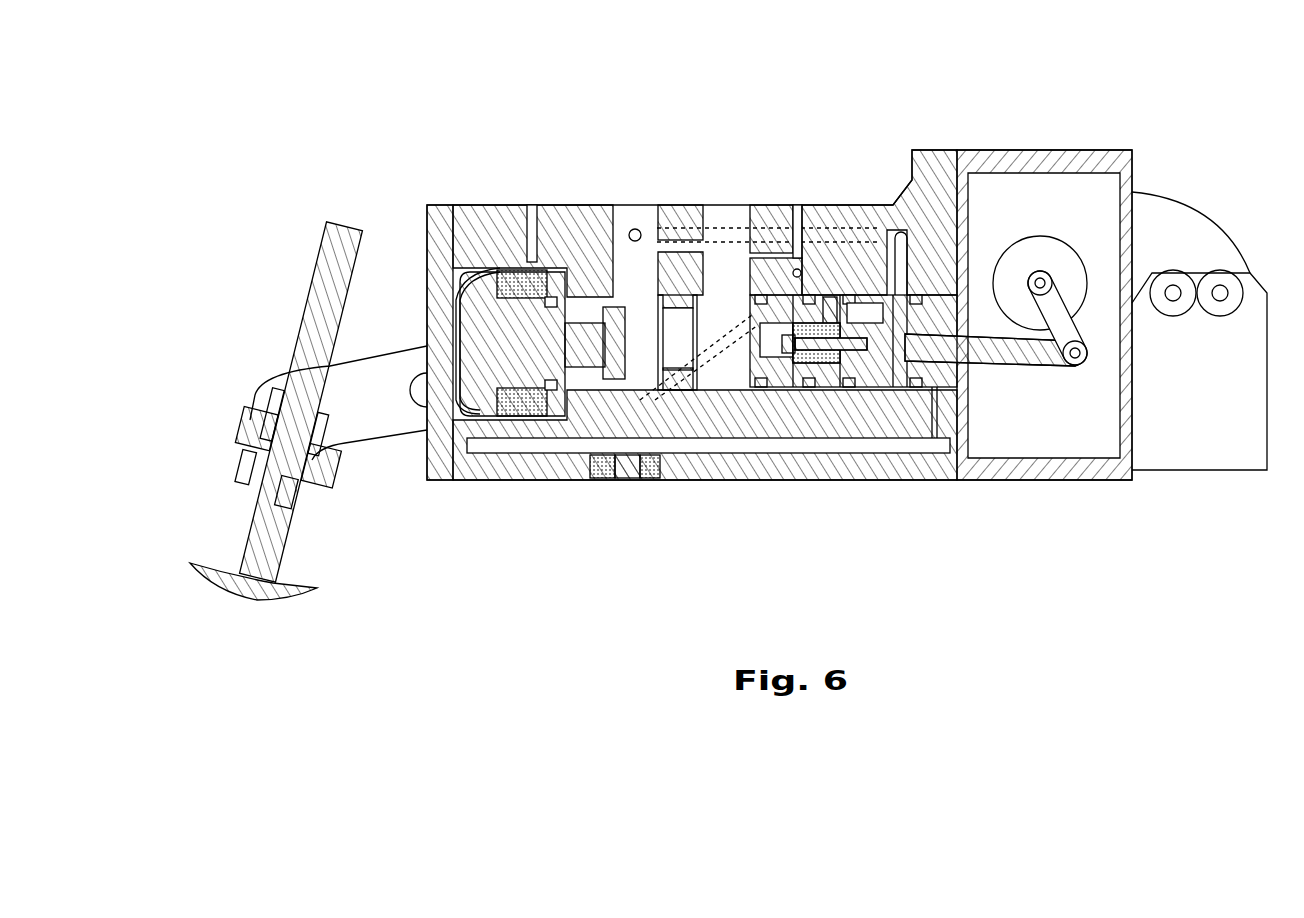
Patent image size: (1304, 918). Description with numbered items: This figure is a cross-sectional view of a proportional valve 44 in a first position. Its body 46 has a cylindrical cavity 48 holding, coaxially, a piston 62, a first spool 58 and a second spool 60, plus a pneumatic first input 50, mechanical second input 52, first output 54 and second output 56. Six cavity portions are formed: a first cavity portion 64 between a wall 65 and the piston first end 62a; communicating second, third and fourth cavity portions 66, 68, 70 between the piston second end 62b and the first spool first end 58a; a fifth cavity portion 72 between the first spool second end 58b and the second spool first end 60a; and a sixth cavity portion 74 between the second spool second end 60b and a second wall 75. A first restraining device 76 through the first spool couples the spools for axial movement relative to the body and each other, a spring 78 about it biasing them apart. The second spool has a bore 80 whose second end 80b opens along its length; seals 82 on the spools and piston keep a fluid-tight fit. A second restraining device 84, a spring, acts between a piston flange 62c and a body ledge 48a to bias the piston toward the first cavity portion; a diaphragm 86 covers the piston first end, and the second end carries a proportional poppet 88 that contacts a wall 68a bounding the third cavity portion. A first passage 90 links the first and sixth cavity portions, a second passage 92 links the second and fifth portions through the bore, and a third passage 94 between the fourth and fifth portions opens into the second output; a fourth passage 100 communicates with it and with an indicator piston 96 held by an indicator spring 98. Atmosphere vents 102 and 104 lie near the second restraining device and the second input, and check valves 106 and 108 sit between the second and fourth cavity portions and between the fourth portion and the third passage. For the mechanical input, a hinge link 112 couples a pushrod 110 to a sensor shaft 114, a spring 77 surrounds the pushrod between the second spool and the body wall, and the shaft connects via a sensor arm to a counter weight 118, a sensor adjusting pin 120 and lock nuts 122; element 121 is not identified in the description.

The proportional valve 44 is at (1080, 92).
The body 46 is at (452, 207).
The cylindrical cavity 48 is at (557, 420).
The ledge 48a is at (546, 300).
The first input 50 is at (722, 196).
The second input 52 is at (992, 370).
The first output 54 is at (632, 205).
The second output 56 is at (795, 200).
The first spool 58 is at (790, 390).
The first spool first end 58a is at (762, 390).
The first spool second end 58b is at (858, 300).
The second spool 60 is at (892, 378).
The second spool first end 60a is at (830, 390).
The second spool second end 60b is at (951, 300).
The piston 62 is at (522, 354).
The piston first end 62a is at (478, 328).
The piston second end 62b is at (606, 445).
The flange 62c is at (513, 440).
The first cavity portion 64 is at (462, 272).
The wall 65 is at (456, 300).
The second cavity portion 66 is at (640, 284).
The third cavity portion 68 is at (688, 364).
The wall 68a is at (616, 455).
The fourth cavity portion 70 is at (724, 326).
The fifth cavity portion 72 is at (830, 297).
The sixth cavity portion 74 is at (935, 395).
The second wall 75 is at (935, 310).
The first restraining device 76 is at (792, 345).
The spring 77 is at (949, 380).
The spring 78 is at (812, 300).
The bore 80 is at (905, 390).
The bore second end 80b is at (899, 232).
The seals 82 is at (552, 297).
The second restraining device 84 is at (498, 270).
The diaphragm 86 is at (460, 420).
The proportional poppet 88 is at (640, 330).
The first passage 90 is at (880, 387).
The second passage 92 is at (830, 300).
The third passage 94 is at (795, 260).
The indicator piston 96 is at (656, 455).
The indicator spring 98 is at (640, 440).
The fourth passage 100 is at (657, 420).
The atmosphere vent 102 is at (530, 205).
The atmosphere vent 104 is at (1128, 447).
The check valve 106 is at (668, 250).
The check valve 108 is at (795, 272).
The pushrod 110 is at (1020, 352).
The hinge link 112 is at (1058, 310).
The sensor shaft 114 is at (1052, 276).
The counter weight 118 is at (1204, 397).
The sensor adjusting pin 120 is at (339, 329).
The foot 121 is at (268, 595).
The lock nuts 122 is at (270, 410).